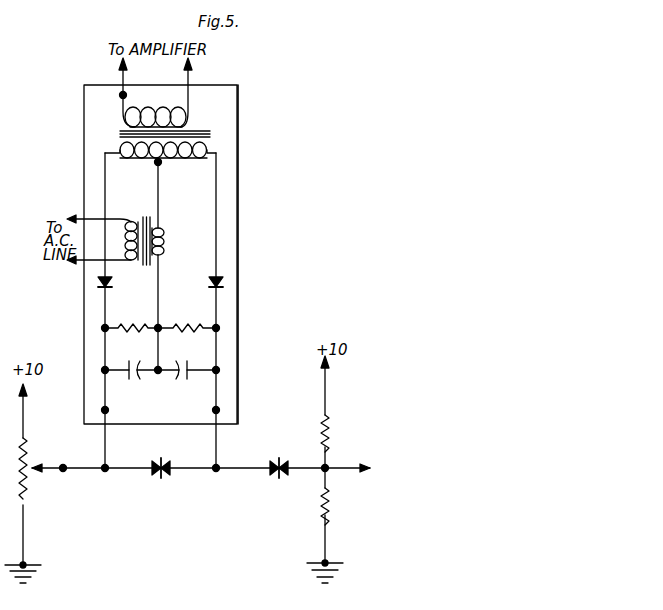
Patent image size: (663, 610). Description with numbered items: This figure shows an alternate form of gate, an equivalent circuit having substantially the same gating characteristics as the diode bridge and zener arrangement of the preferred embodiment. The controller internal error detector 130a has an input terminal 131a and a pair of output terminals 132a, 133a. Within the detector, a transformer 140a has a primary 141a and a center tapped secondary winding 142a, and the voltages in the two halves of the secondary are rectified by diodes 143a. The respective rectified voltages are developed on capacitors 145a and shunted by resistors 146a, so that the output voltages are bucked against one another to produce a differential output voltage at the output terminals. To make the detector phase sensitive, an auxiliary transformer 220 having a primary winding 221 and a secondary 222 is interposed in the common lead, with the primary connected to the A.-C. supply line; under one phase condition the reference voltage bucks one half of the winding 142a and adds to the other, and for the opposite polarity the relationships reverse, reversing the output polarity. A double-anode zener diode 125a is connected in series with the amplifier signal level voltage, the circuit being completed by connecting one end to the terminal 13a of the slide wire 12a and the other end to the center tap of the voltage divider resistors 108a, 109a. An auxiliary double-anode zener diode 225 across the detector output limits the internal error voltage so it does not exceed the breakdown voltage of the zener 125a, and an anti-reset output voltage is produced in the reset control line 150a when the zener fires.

The controller internal error detector 130a is at (240, 99).
The input terminal 131a is at (121, 94).
The primary 141a is at (125, 112).
The transformer 140a is at (232, 137).
The center tapped secondary winding 142a is at (178, 158).
The auxiliary transformer 220 is at (143, 217).
The primary winding 221 is at (126, 227).
The secondary 222 is at (164, 238).
The diodes 143a is at (97, 283).
The resistors 146a is at (134, 325).
The capacitors 145a is at (178, 376).
The output terminal 132a is at (103, 410).
The output terminal 133a is at (220, 408).
The potentiometer 12a is at (28, 443).
The terminal of the slide wire 13a is at (64, 472).
The auxiliary double-anode zener diode 225 is at (160, 480).
The double-anode zener diode 125a is at (268, 468).
The voltage divider resistor 108a is at (330, 426).
The reset control line 150a is at (340, 468).
The voltage divider resistor 109a is at (330, 506).